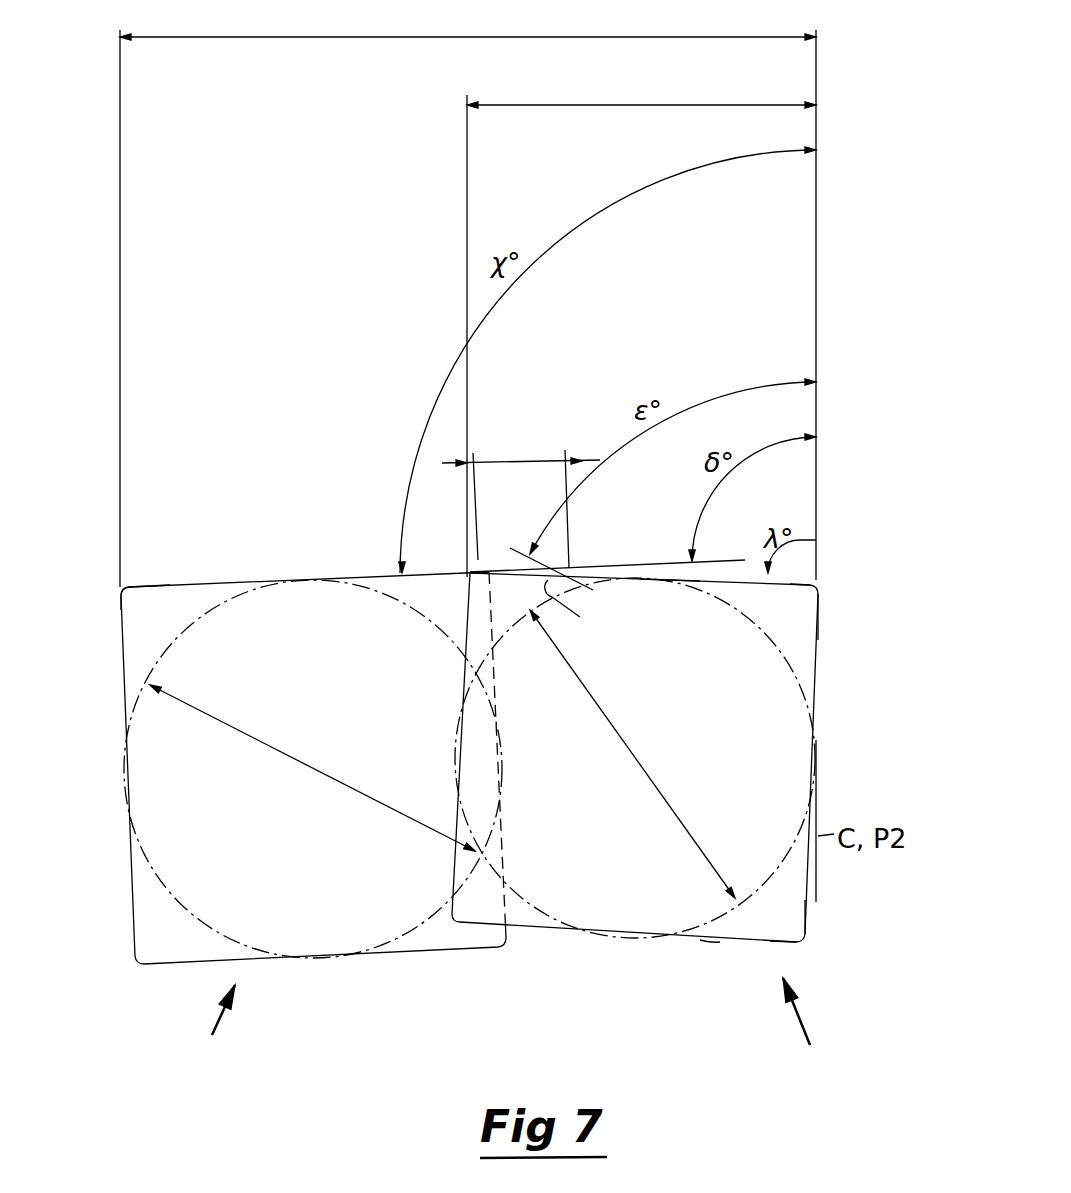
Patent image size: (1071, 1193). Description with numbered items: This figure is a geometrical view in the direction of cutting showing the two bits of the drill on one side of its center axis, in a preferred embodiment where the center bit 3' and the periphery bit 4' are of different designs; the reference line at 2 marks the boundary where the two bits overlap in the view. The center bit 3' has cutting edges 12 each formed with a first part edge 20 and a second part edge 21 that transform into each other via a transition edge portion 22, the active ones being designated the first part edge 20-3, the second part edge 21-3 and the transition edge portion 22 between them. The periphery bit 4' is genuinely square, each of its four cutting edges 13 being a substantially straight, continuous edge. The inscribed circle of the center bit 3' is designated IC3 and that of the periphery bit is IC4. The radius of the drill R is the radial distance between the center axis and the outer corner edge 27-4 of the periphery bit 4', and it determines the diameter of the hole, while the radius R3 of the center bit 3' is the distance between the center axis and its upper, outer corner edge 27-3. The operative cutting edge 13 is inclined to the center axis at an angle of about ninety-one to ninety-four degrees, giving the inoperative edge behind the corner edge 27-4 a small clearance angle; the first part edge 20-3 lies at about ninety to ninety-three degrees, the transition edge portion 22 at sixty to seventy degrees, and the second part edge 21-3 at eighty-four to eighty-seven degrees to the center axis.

The cutter body 2 is at (456, 742).
The cutting edge 12 is at (620, 573).
The side edge of insert 13 is at (257, 580).
The first part edge 20 is at (822, 625).
The second part edge 21 is at (567, 930).
The transition edge portion 22 is at (700, 975).
The active first part edge of the center bit 20-3 is at (497, 567).
The second part edge of the center bit 21-3 is at (667, 577).
The upper outer corner edge of the center bit 27-3 is at (478, 574).
The outer corner edge of the periphery bit 27-4 is at (120, 588).
The center bit 3' is at (805, 1029).
The periphery bit 4' is at (215, 1029).
The inscribed circle of the center bit IC3 is at (784, 854).
The inscribed circle of the periphery bit IC4 is at (158, 876).
The radius of the drill R is at (468, 21).
The radius of the center bit R3 is at (641, 90).